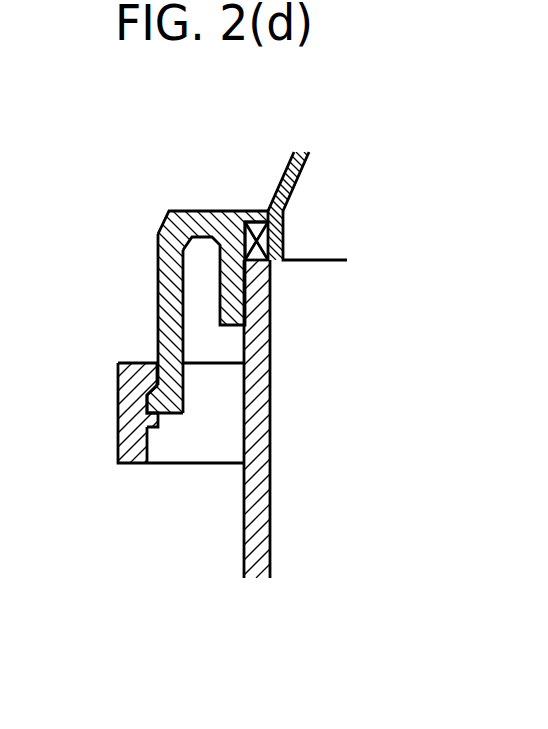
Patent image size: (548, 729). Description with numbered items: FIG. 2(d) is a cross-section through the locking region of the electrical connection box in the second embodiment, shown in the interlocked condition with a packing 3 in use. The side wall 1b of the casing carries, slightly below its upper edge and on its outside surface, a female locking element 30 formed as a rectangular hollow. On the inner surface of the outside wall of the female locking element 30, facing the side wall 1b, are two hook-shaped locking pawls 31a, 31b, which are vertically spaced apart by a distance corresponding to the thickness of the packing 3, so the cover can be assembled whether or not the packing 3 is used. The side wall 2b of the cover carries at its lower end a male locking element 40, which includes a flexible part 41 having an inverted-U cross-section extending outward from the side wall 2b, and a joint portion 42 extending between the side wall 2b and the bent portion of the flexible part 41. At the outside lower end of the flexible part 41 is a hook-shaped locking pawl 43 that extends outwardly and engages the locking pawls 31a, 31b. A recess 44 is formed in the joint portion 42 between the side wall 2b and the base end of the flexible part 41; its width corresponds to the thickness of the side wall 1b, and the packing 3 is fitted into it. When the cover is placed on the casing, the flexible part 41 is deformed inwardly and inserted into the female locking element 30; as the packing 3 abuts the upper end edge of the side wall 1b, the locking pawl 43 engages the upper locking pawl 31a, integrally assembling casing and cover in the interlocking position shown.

The side wall 1b is at (272, 538).
The side wall 2b is at (300, 183).
The packing 3 is at (283, 237).
The female locking element 30 is at (135, 451).
The locking pawl 31a is at (115, 363).
The locking pawl 31b is at (147, 414).
The male locking element 40 is at (229, 289).
The flexible part 41 is at (168, 284).
The joint portion 42 is at (207, 211).
The locking pawl 43 is at (157, 397).
The recess 44 is at (285, 262).